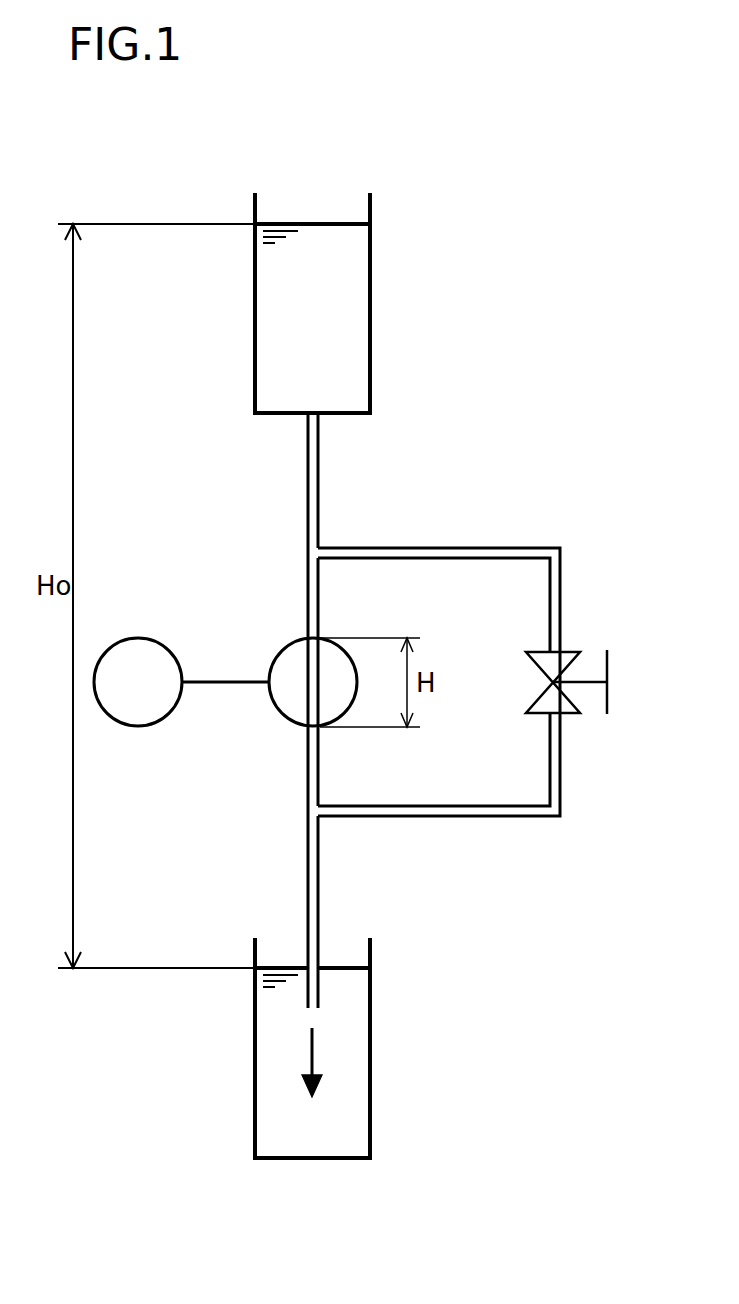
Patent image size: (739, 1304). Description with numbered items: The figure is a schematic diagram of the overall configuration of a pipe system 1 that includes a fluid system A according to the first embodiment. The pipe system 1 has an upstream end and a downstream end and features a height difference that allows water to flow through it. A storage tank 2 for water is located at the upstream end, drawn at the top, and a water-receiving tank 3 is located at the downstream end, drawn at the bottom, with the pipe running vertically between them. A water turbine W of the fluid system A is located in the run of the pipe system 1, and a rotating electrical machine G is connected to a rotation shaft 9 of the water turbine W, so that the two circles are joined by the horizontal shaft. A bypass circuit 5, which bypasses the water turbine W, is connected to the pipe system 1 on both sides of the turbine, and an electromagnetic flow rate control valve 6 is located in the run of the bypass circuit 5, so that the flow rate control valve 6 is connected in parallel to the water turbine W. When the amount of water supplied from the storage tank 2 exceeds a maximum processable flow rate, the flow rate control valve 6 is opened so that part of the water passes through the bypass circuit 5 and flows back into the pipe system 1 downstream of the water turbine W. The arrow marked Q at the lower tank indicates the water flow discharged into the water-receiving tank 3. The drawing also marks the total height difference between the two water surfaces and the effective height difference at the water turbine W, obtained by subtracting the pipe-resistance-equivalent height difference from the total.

The pipe system 1 is at (322, 458).
The storage tank 2 is at (372, 308).
The water-receiving tank 3 is at (372, 1050).
The bypass circuit 5 is at (458, 818).
The flow rate control valve 6 is at (571, 652).
The rotation shaft 9 is at (224, 686).
The fluid system A is at (192, 748).
The rotating electrical machine G is at (138, 682).
The water turbine W is at (313, 682).
The flow rate Q is at (320, 1062).